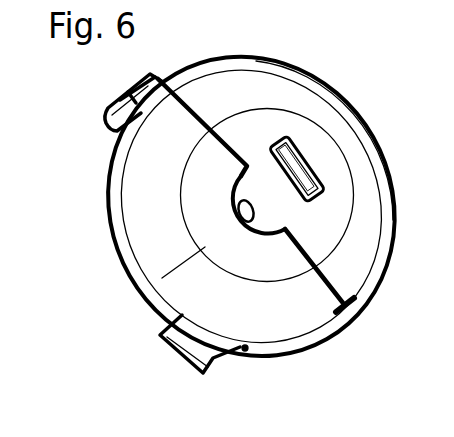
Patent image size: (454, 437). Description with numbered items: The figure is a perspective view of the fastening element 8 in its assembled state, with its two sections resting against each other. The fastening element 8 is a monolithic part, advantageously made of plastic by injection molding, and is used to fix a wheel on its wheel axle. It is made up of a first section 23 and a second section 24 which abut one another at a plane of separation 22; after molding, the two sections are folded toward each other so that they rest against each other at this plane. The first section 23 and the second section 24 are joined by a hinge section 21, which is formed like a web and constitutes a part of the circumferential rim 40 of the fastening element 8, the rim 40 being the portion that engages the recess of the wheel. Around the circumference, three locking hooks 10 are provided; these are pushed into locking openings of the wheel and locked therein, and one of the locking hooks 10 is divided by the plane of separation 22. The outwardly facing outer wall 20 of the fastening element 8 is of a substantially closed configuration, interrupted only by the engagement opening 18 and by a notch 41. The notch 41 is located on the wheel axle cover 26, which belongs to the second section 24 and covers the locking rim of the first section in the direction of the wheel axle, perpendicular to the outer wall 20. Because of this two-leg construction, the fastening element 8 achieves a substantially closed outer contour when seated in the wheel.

The fastening element 8 is at (119, 325).
The locking hooks 10 is at (125, 103).
The engagement opening 18 is at (290, 172).
The outer wall 20 is at (265, 272).
The hinge section 21 is at (352, 316).
The plane of separation 22 is at (203, 112).
The first section 23 is at (147, 175).
The second section 24 is at (302, 90).
The wheel axle cover 26 is at (272, 213).
The circumferential rim 40 is at (137, 259).
The notch 41 is at (250, 226).